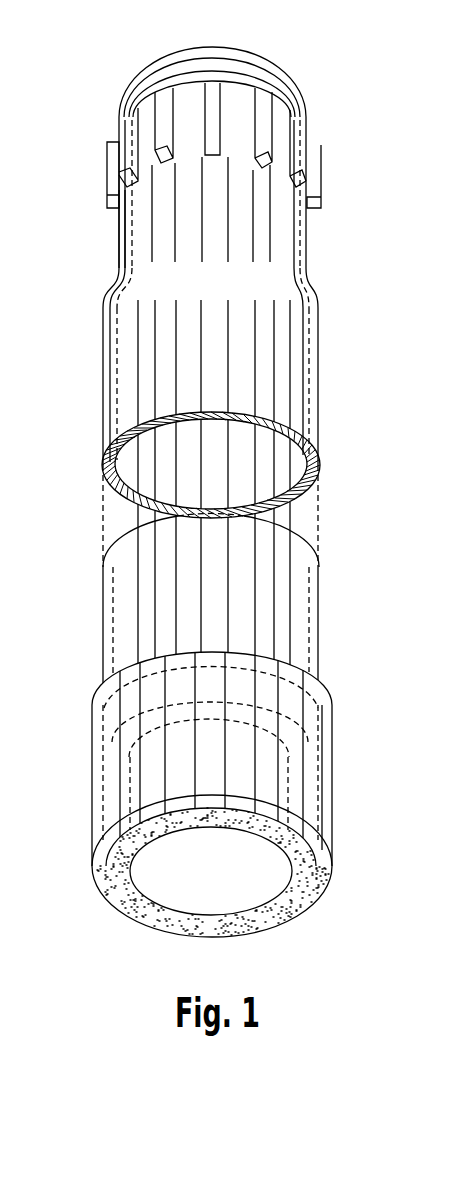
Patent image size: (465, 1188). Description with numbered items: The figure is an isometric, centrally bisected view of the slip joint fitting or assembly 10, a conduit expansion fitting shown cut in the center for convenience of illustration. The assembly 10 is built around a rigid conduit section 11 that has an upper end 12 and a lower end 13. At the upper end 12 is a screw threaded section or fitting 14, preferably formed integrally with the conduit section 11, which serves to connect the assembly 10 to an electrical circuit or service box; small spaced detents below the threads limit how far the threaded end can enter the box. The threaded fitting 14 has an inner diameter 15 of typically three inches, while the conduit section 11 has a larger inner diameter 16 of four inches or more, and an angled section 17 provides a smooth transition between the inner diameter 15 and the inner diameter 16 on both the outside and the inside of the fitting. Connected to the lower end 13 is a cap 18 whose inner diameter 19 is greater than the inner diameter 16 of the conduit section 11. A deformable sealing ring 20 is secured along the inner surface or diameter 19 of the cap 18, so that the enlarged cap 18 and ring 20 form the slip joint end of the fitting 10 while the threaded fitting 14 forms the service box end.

The slip joint fitting assembly 10 is at (236, 487).
The rigid conduit section 11 is at (318, 417).
The upper end 12 is at (313, 243).
The lower end 13 is at (236, 759).
The screw threaded section 14 is at (303, 92).
The inner diameter 15 is at (127, 253).
The inner diameter 16 is at (110, 397).
The angled section 17 is at (313, 288).
The cap 18 is at (332, 778).
The inner diameter 19 is at (92, 755).
The deformable sealing ring 20 is at (127, 903).